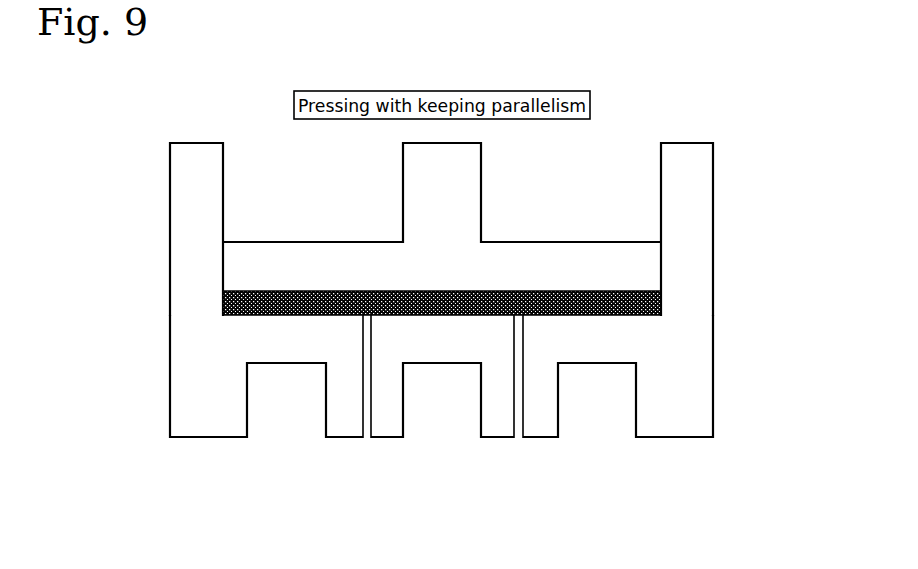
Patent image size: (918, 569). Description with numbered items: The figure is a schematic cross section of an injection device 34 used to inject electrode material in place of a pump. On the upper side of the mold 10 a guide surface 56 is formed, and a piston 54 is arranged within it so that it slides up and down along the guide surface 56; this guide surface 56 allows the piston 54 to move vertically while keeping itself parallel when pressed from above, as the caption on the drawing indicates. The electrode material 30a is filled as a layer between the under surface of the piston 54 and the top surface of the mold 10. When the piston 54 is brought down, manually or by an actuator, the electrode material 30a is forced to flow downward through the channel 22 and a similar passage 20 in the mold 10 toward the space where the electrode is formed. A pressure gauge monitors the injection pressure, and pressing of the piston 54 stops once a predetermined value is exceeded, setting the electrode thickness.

The guide surface 56 is at (660, 190).
The piston 54 is at (633, 262).
The electrode material 30a is at (663, 300).
The mold 10 is at (683, 366).
The support pin 20 is at (362, 436).
The channel 22 is at (366, 346).
The injection device 34 is at (728, 387).